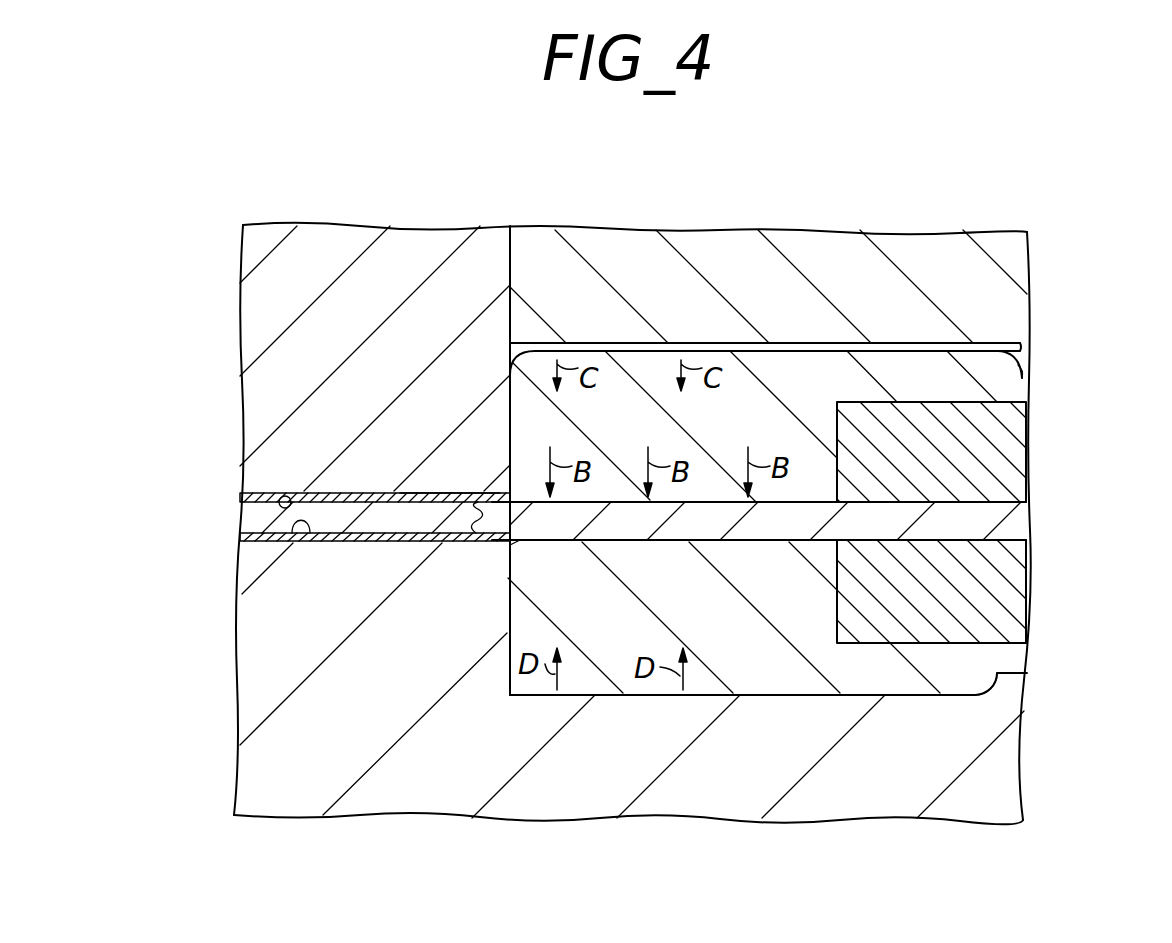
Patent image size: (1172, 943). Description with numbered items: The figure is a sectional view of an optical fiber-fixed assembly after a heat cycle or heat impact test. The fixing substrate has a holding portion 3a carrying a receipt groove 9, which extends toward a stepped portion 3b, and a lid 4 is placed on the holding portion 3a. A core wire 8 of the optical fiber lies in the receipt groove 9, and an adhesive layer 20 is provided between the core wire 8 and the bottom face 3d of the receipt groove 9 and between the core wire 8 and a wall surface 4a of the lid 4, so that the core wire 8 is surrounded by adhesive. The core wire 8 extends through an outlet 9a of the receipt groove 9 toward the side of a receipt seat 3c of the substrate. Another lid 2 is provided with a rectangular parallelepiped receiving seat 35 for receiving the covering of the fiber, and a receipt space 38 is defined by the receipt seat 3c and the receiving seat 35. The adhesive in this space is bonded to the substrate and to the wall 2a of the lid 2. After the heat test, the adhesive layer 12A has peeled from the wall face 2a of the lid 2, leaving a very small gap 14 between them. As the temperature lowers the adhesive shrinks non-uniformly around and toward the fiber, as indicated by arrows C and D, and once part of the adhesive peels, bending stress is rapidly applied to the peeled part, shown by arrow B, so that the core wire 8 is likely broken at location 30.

The lid 2 is at (815, 250).
The wall of the lid 2a is at (1023, 377).
The holding portion 3a is at (253, 655).
The stepped portion 3b is at (992, 763).
The receipt seat 3c is at (1027, 673).
The bottom face of the receipt groove 3d is at (300, 543).
The lid 4 is at (348, 240).
The wall surface of the lid 4a is at (285, 496).
The core wire 8 is at (400, 520).
The receipt groove 9 is at (345, 493).
The outlet of the receipt groove 9a is at (508, 543).
The adhesive layer 12A is at (770, 368).
The gap 14 is at (590, 345).
The adhesive layer 20 is at (445, 493).
The location 30 is at (476, 543).
The receiving seat 35 is at (818, 345).
The receipt space 38 is at (1047, 472).